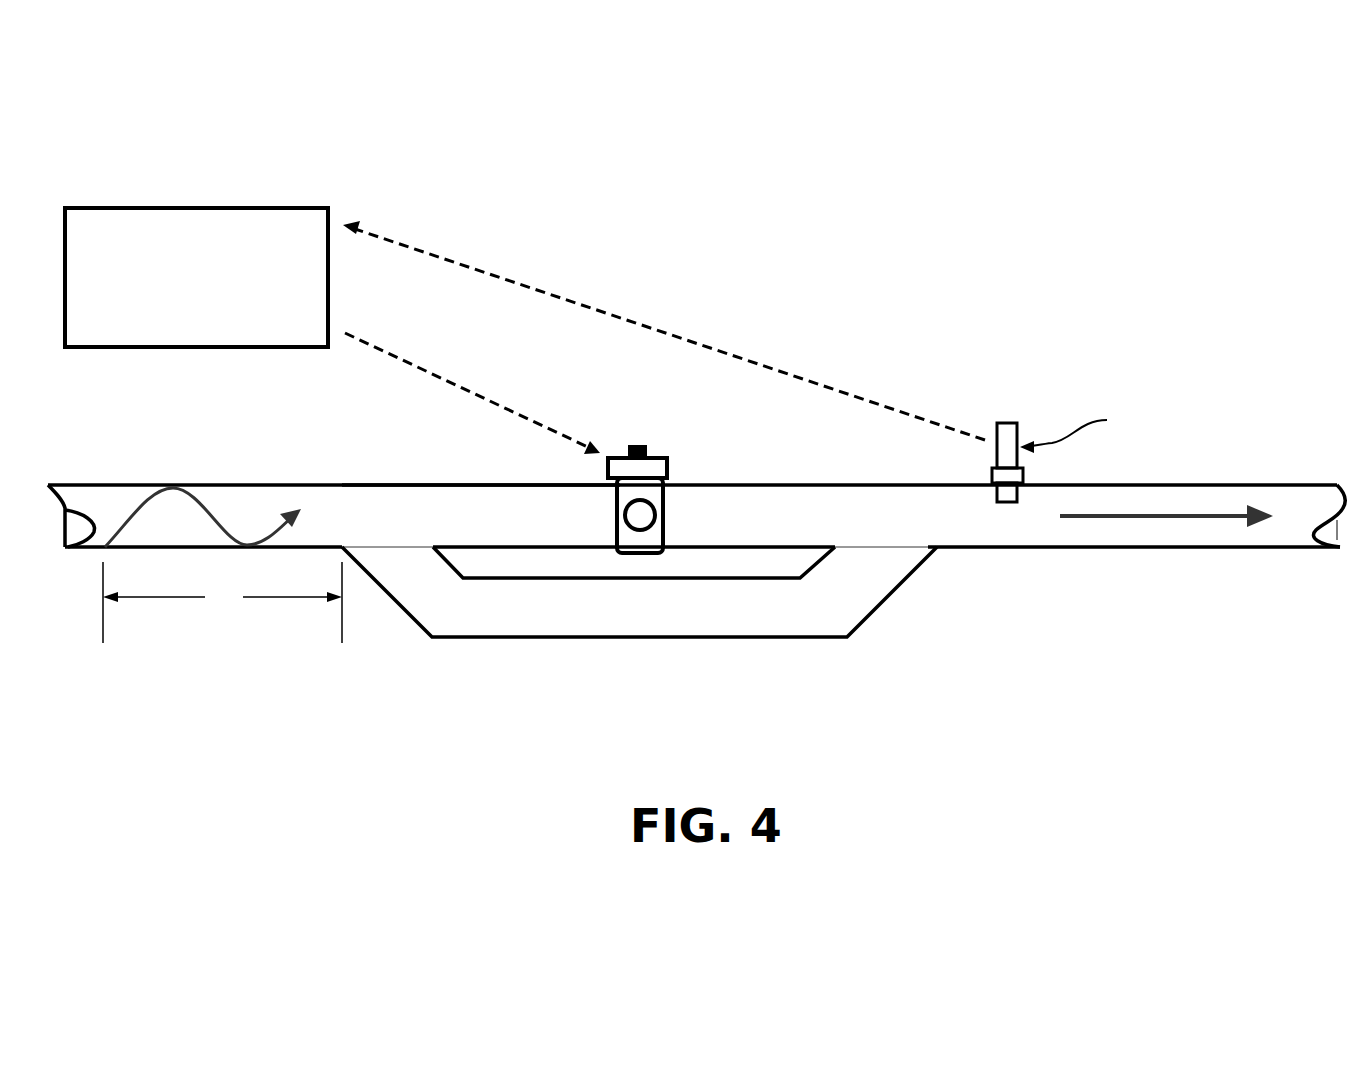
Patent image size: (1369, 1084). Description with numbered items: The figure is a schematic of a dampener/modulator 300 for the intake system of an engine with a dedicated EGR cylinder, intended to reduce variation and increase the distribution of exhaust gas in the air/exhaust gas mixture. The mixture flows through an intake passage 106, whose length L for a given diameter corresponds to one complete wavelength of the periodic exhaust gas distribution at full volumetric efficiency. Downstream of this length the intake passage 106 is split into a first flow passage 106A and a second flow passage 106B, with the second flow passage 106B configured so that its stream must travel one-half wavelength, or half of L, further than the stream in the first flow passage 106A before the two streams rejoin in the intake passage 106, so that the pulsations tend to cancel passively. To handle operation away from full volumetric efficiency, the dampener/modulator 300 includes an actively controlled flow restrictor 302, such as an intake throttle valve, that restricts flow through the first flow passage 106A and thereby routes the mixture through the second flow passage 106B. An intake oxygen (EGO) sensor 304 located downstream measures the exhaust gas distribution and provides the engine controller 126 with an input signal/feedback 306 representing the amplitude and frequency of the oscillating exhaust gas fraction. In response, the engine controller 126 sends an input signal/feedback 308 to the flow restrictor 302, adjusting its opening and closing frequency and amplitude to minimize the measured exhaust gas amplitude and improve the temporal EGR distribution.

The engine controller 126 is at (196, 259).
The dampener/modulator 300 is at (710, 262).
The flow restrictor 302 is at (642, 565).
The intake oxygen (EGO) sensor 304 is at (1003, 423).
The input signal/feedback 306 is at (664, 330).
The input signal/feedback 308 is at (472, 390).
The intake passage 106 is at (250, 505).
The first flow passage 106A is at (543, 505).
The second flow passage 106B is at (415, 588).